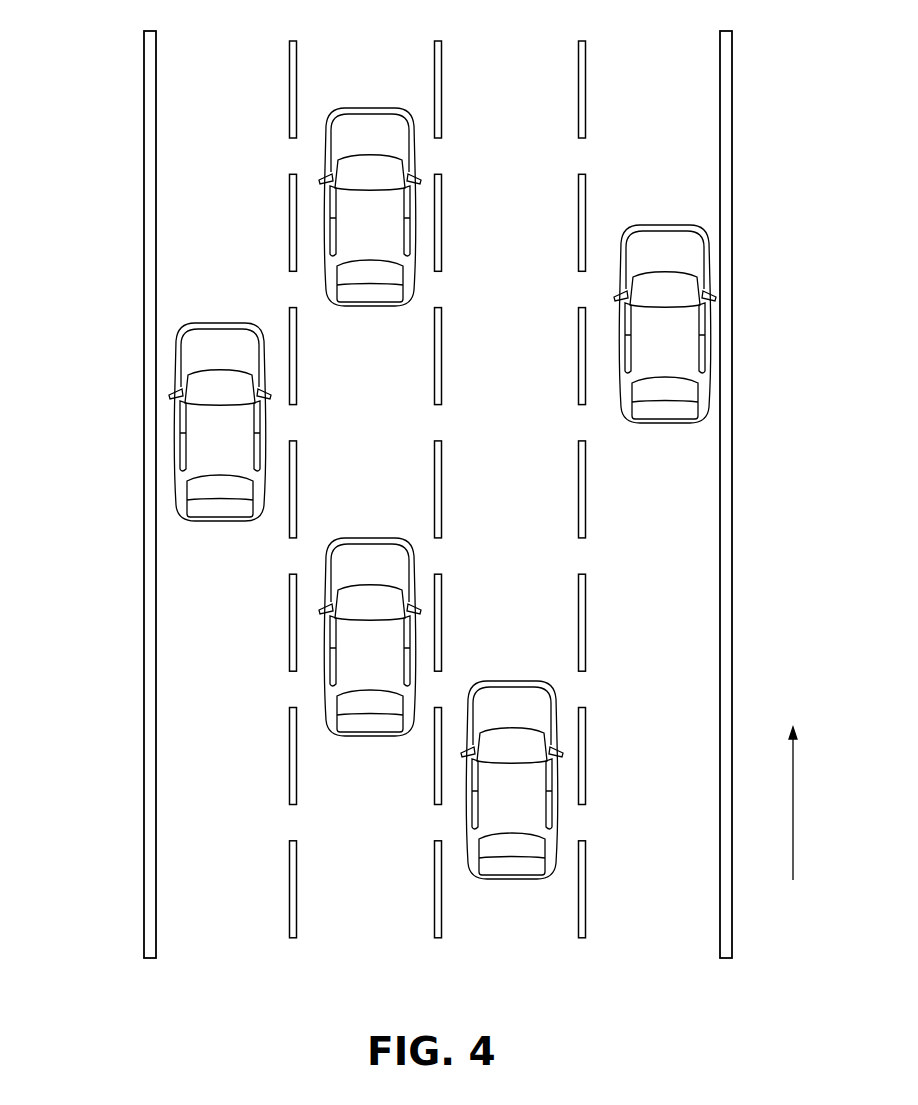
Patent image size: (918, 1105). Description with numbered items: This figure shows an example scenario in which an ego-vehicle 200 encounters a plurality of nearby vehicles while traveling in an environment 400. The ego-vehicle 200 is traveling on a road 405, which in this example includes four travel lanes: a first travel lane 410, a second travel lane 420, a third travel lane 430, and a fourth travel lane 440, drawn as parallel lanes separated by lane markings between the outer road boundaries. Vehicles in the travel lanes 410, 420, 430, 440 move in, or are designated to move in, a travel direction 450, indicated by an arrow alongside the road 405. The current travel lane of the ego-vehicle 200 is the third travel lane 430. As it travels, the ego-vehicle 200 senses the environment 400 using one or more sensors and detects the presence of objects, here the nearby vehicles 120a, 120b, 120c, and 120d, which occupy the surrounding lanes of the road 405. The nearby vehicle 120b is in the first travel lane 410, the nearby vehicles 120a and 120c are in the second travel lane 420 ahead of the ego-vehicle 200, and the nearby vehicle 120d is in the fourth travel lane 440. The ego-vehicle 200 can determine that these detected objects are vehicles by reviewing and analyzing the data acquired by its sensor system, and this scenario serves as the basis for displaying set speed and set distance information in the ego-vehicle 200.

The environment 400 is at (812, 39).
The road 405 is at (132, 798).
The first travel lane 410 is at (236, 923).
The second travel lane 420 is at (381, 923).
The third travel lane 430 is at (526, 923).
The fourth travel lane 440 is at (669, 923).
The travel direction 450 is at (793, 811).
The nearby vehicle 120a is at (368, 736).
The nearby vehicle 120b is at (218, 521).
The nearby vehicle 120c is at (370, 307).
The nearby vehicle 120d is at (665, 423).
The ego-vehicle 200 is at (557, 812).